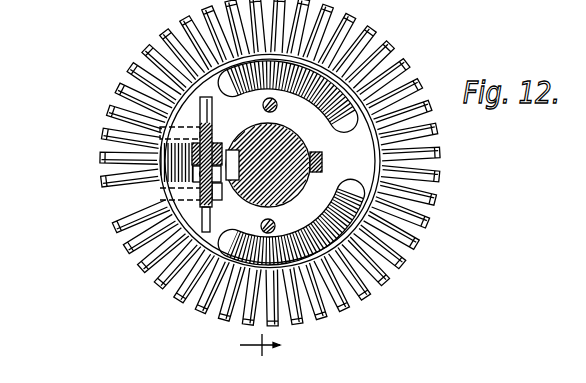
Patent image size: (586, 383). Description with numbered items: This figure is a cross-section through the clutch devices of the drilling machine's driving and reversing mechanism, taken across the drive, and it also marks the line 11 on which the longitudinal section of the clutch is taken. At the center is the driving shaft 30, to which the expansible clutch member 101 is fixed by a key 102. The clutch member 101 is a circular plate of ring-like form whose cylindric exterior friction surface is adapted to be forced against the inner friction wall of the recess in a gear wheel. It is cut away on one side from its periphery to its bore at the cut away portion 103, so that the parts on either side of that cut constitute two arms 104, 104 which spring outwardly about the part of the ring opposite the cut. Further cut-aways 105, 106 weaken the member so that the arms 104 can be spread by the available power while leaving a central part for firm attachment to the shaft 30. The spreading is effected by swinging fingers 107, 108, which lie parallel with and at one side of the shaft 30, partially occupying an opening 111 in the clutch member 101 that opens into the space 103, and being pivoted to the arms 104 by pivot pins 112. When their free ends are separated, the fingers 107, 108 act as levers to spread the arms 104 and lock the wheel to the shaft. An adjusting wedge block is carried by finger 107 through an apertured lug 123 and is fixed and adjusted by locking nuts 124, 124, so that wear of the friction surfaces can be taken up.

The section line 11 is at (248, 346).
The driving shaft 30 is at (289, 138).
The expansible clutch member 101 is at (370, 164).
The key 102 is at (319, 153).
The cut away portion 103 is at (173, 172).
The arms 104 is at (135, 78).
The cut away 105 is at (380, 63).
The cut away 106 is at (192, 266).
The swinging finger 107 is at (206, 108).
The swinging finger 108 is at (209, 218).
The opening 111 is at (185, 270).
The pivot pins 112 is at (110, 122).
The apertured lug 123 is at (100, 160).
The locking nuts 124 is at (211, 197).